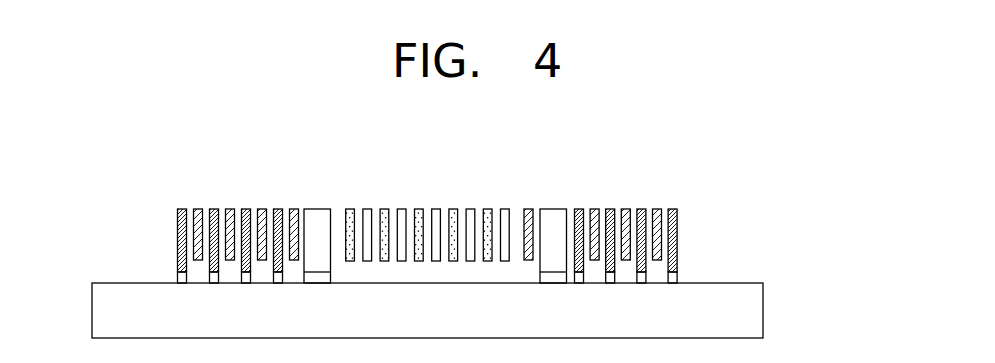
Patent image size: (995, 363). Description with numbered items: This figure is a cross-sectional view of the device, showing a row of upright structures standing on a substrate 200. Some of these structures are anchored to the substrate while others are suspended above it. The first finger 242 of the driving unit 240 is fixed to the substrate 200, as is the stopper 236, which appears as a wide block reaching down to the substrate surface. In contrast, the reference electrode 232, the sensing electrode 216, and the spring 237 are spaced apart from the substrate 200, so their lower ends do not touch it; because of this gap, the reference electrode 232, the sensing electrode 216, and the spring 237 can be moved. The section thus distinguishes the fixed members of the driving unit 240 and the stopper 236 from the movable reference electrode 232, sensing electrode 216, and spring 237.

The substrate 200 is at (750, 315).
The driving unit 240 is at (177, 236).
The first finger 242 is at (213, 209).
The spring 237 is at (295, 209).
The stopper 236 is at (315, 220).
The sensing electrode 216 is at (420, 210).
The reference electrode 232 is at (438, 217).